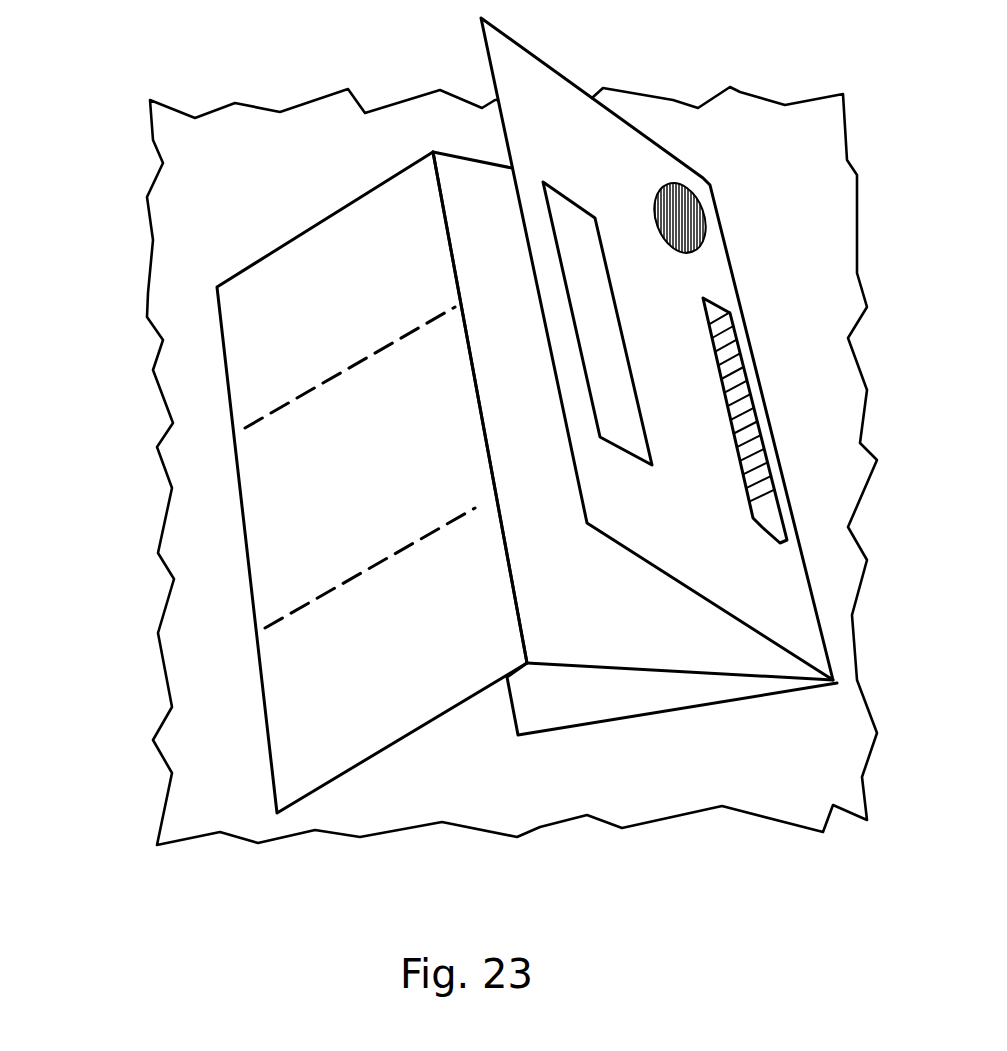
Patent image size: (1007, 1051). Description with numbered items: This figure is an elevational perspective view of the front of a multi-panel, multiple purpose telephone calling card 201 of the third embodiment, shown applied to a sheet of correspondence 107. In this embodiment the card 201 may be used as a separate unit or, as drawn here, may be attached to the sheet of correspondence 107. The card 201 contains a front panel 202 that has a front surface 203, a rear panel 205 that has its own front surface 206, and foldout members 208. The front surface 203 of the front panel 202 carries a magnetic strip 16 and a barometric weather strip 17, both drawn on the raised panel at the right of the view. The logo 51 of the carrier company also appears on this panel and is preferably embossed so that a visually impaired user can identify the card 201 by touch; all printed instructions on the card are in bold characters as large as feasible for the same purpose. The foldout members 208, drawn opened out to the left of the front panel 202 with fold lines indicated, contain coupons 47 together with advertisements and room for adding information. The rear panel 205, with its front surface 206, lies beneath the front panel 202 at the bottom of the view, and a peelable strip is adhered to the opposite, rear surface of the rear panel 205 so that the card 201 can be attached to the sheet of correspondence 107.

The multi-panel, multiple purpose telephone calling card 201 is at (262, 196).
The sheet of correspondence 107 is at (178, 287).
The coupons 47 is at (267, 359).
The foldout members 208 is at (510, 393).
The front panel 202 is at (595, 470).
The front surface 203 is at (680, 552).
The logo 51 is at (678, 182).
The barometric weather strip 17 is at (583, 283).
The magnetic strip 16 is at (737, 382).
The front surface 206 is at (618, 703).
The rear panel 205 is at (728, 690).